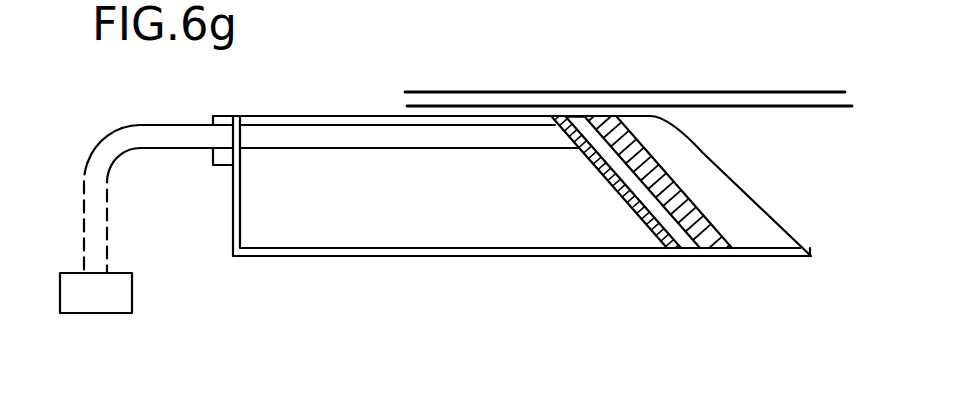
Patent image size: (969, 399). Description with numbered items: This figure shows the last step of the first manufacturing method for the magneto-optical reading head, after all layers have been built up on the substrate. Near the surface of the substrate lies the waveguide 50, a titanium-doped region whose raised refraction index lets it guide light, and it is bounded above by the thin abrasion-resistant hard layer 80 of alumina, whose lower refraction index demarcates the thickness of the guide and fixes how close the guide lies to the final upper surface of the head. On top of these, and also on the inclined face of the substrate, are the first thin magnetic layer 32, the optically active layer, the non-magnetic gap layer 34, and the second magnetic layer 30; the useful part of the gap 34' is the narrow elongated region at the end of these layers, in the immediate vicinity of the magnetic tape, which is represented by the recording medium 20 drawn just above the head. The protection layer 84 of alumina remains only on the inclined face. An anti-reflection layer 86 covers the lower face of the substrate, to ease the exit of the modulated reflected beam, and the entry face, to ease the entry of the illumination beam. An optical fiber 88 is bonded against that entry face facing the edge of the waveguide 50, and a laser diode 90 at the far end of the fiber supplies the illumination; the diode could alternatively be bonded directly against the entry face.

The sheet 20 is at (457, 100).
The second magnetic layer 30 is at (725, 254).
The first thin magnetic layer 32 is at (665, 250).
The non-magnetic layer 34 is at (658, 219).
The useful part of the gap 34' is at (592, 84).
The waveguide 50 is at (287, 135).
The abrasion-resistant hard layer 80 is at (353, 122).
The protection layer 84 is at (743, 203).
The anti-reflection layer 86 is at (233, 232).
The optical fiber 88 is at (137, 125).
The laser diode 90 is at (125, 304).